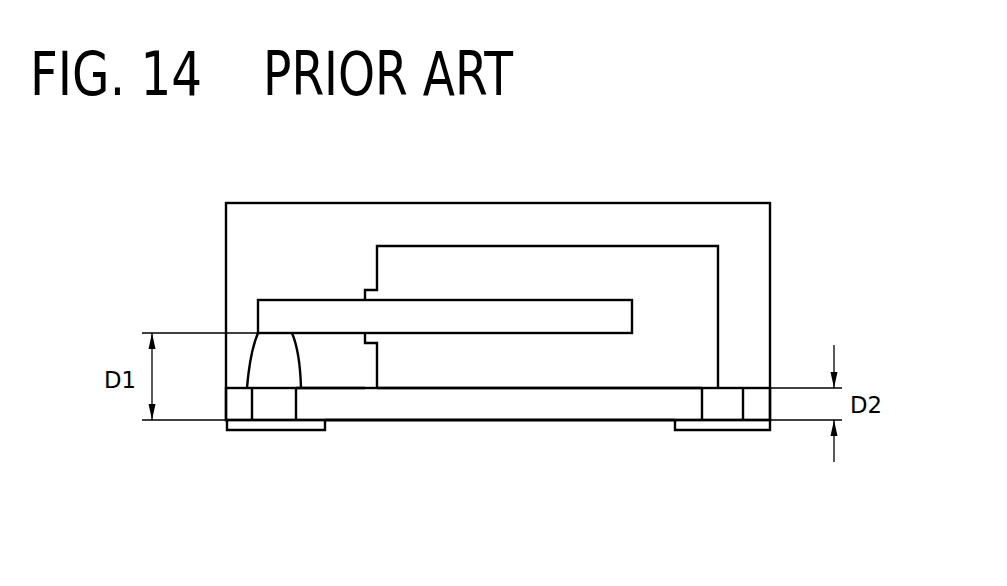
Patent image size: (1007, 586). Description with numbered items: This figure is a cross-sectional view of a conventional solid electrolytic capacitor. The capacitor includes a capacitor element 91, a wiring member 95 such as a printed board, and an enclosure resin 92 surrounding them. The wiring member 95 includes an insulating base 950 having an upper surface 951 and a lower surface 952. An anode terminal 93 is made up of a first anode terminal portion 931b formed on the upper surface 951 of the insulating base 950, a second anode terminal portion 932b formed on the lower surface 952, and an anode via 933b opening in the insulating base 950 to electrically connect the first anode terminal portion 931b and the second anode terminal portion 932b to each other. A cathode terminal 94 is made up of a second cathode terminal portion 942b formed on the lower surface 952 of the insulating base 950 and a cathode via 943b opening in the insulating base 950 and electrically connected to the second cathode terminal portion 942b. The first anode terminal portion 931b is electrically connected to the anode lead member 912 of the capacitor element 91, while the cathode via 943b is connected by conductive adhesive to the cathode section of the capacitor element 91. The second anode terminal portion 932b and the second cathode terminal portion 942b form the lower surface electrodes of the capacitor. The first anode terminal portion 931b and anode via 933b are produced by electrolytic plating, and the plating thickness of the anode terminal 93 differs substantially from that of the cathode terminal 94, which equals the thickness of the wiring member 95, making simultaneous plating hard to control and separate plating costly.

The capacitor element 91 is at (523, 267).
The anode lead member 912 is at (323, 312).
The enclosure resin 92 is at (688, 223).
The anode terminal 93 is at (194, 446).
The first anode terminal portion 931b is at (268, 354).
The second anode terminal portion 932b is at (275, 426).
The anode via 933b is at (268, 403).
The cathode terminal 94 is at (727, 465).
The second cathode terminal portion 942b is at (695, 427).
The cathode via 943b is at (717, 404).
The wiring member 95 is at (487, 409).
The insulating base 950 is at (557, 407).
The upper surface 951 is at (338, 388).
The lower surface 952 is at (418, 418).